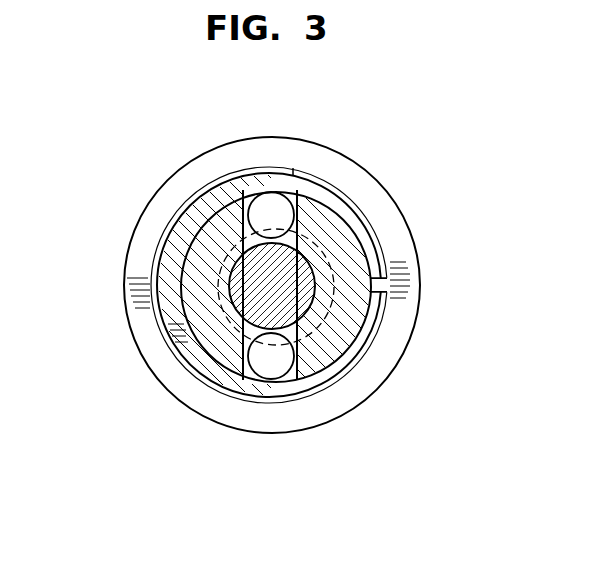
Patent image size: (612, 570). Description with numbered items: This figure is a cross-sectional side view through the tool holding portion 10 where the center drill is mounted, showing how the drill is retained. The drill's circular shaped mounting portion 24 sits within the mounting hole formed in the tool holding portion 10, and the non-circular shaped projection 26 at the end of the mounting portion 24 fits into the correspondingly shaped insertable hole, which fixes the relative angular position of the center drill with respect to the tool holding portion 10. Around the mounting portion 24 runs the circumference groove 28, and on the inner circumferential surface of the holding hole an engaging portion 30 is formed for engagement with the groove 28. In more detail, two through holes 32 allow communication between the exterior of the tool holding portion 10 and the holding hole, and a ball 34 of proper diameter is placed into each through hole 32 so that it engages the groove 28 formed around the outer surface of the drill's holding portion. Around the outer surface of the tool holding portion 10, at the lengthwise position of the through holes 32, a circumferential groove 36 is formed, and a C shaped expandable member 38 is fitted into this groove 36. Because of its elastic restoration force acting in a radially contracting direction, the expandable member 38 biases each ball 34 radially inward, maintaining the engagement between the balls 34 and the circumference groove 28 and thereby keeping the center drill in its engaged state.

The tool holding portion 10 is at (216, 203).
The mounting portion 24 is at (217, 260).
The non-circular shaped projection 26 is at (377, 348).
The circumference groove 28 is at (228, 288).
The engaging portion 30 is at (323, 157).
The through hole 32 is at (280, 170).
The ball 34 is at (260, 195).
The circumferential groove 36 is at (372, 222).
The C shaped expandable member 38 is at (180, 226).